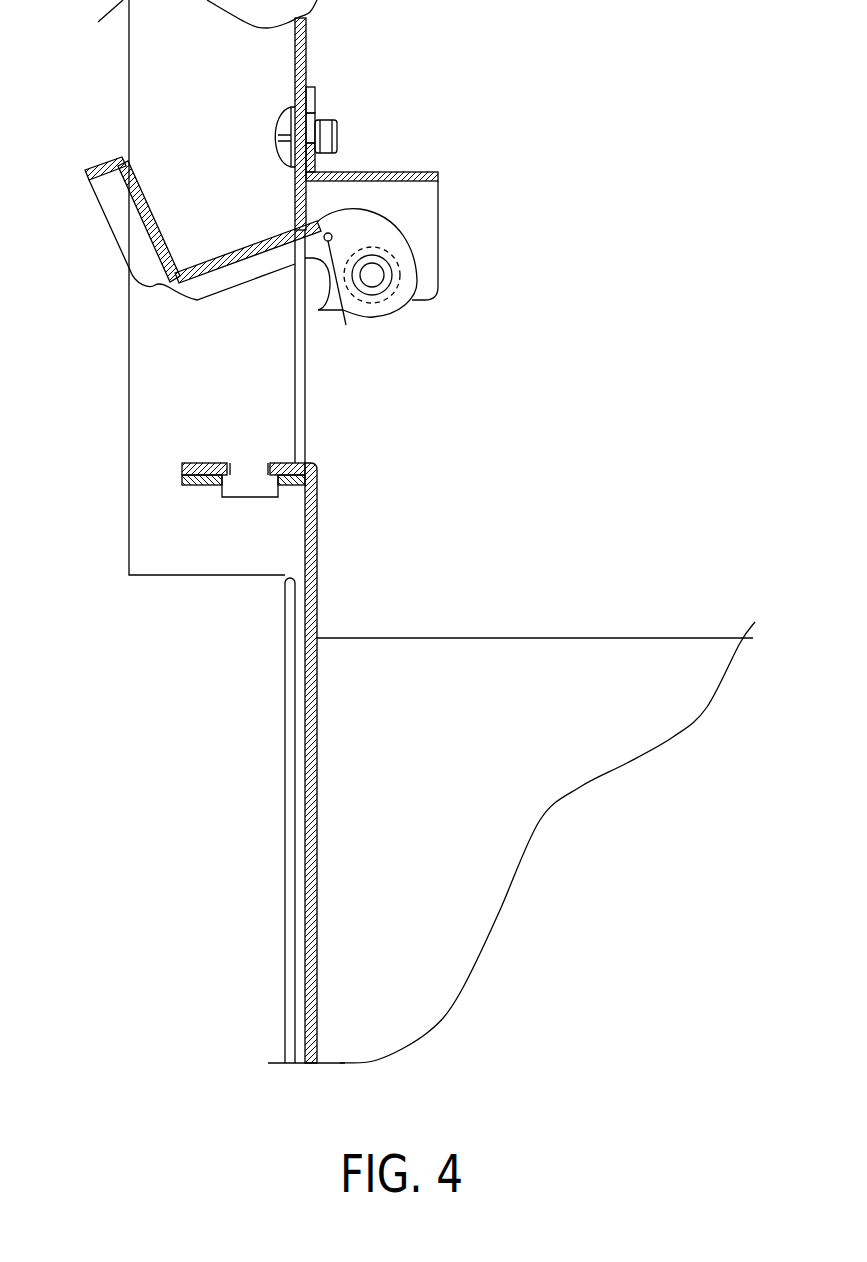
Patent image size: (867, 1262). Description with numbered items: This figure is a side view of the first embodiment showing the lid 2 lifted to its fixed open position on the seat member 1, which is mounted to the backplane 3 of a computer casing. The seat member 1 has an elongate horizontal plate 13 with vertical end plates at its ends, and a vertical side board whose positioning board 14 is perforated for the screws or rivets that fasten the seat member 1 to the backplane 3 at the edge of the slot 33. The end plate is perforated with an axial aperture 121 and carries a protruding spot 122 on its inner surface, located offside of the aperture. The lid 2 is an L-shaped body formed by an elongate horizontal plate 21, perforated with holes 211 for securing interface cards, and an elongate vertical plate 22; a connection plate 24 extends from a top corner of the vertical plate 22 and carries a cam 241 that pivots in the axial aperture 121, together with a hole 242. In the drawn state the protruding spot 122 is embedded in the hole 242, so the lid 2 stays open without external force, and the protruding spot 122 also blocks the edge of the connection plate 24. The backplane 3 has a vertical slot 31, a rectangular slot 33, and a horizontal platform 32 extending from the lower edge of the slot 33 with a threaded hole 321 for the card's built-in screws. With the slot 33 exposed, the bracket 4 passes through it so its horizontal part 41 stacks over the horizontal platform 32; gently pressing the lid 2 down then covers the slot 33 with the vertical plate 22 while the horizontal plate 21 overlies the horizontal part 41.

The seat member 1 is at (457, 148).
The lid 2 is at (103, 272).
The backplane 3 is at (297, 72).
The bracket 4 is at (317, 555).
The elongate horizontal plate 13 is at (388, 172).
The positioning board 14 is at (313, 93).
The elongate horizontal plate 21 is at (137, 185).
The elongate vertical plate 22 is at (240, 253).
The connection plate 24 is at (390, 240).
The vertical slot 31 is at (300, 703).
The horizontal platform 32 is at (192, 485).
The slot 33 is at (302, 383).
The horizontal part 41 is at (212, 463).
The axial aperture 121 is at (400, 278).
The protruding spot 122 is at (331, 233).
The hole 211 is at (152, 237).
The cam 241 is at (377, 287).
The hole 242 is at (347, 299).
The threaded hole 321 is at (242, 488).